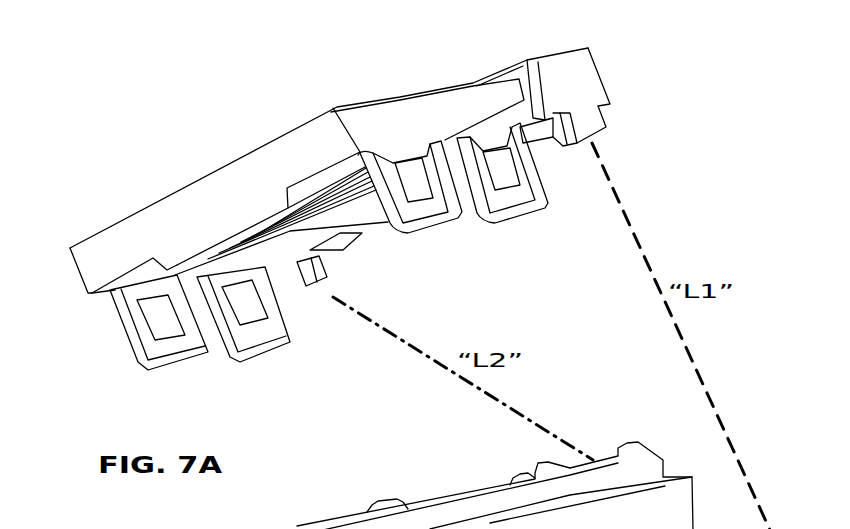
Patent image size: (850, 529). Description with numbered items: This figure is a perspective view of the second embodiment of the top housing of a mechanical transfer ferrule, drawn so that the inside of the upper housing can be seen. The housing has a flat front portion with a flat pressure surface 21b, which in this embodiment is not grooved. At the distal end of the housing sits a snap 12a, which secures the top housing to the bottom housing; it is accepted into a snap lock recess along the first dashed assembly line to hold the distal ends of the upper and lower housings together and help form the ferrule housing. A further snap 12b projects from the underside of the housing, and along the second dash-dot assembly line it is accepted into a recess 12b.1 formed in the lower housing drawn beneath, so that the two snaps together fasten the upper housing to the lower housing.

The pressure surface 21b is at (212, 246).
The snap 12a is at (583, 118).
The snap 12b is at (322, 270).
The recess 12b.1 is at (590, 448).